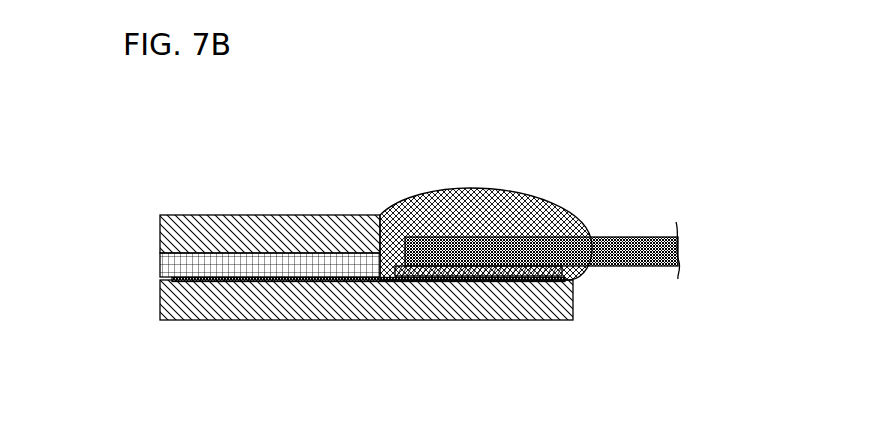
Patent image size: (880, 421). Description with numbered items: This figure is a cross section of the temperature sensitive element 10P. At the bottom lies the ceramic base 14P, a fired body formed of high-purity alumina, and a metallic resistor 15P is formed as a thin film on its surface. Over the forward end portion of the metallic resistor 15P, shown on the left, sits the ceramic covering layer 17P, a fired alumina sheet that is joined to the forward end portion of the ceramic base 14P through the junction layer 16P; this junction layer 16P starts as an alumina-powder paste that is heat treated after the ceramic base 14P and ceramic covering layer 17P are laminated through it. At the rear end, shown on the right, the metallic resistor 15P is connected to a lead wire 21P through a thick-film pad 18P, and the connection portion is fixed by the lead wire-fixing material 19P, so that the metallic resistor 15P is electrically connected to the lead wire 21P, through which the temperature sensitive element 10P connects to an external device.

The temperature sensitive element 10P is at (383, 143).
The ceramic base 14P is at (208, 322).
The metallic resistor 15P is at (381, 283).
The junction layer 16P is at (160, 266).
The ceramic covering layer 17P is at (255, 215).
The thick-film pad 18P is at (470, 283).
The lead wire-fixing material 19P is at (527, 190).
The lead wire 21P is at (640, 236).